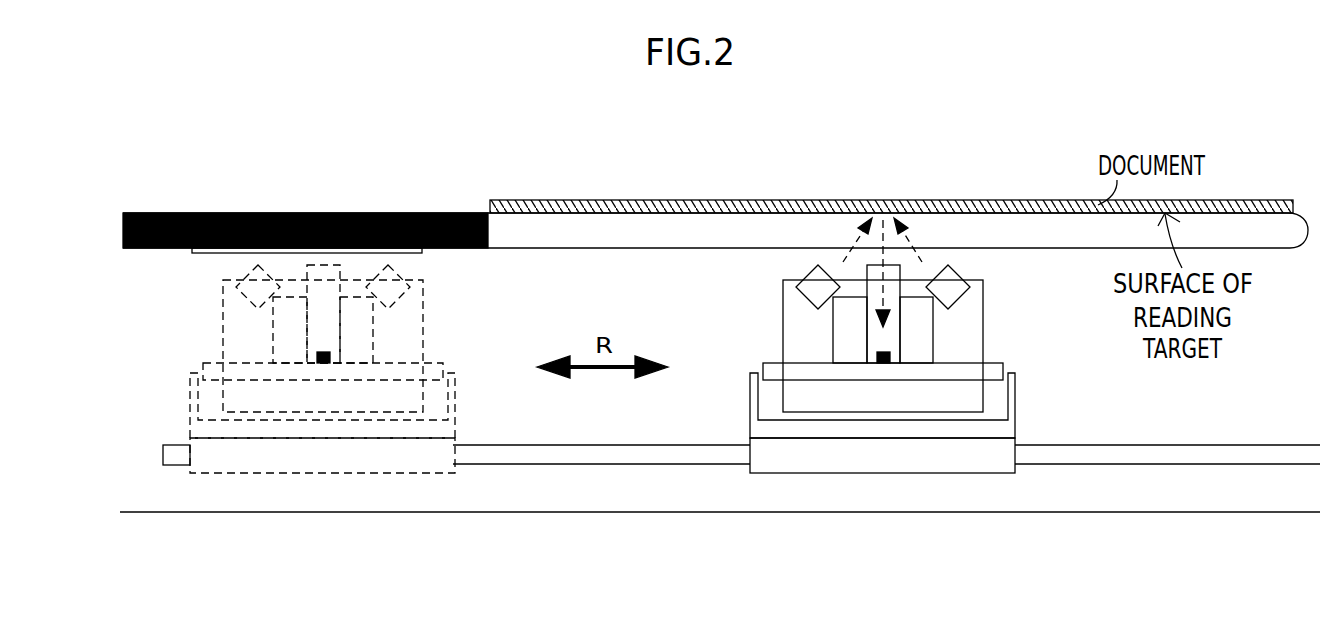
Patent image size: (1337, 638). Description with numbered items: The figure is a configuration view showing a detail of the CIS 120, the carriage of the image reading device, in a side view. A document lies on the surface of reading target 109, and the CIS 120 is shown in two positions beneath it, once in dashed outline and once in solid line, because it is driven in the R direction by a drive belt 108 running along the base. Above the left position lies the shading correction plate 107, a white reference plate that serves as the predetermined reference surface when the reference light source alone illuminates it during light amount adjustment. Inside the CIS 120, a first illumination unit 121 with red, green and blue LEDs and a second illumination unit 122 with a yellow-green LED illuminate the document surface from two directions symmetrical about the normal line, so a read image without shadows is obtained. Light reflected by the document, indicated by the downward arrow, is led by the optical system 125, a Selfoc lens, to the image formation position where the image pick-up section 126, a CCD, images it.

The shading correction plate 107 is at (195, 253).
The drive belt 108 is at (628, 453).
The surface of reading target 109 is at (1277, 240).
The CIS 120 is at (185, 360).
The first illumination unit 121 is at (798, 287).
The second illumination unit 122 is at (948, 280).
The optical system 125 is at (882, 345).
The image pick-up section 126 is at (883, 363).